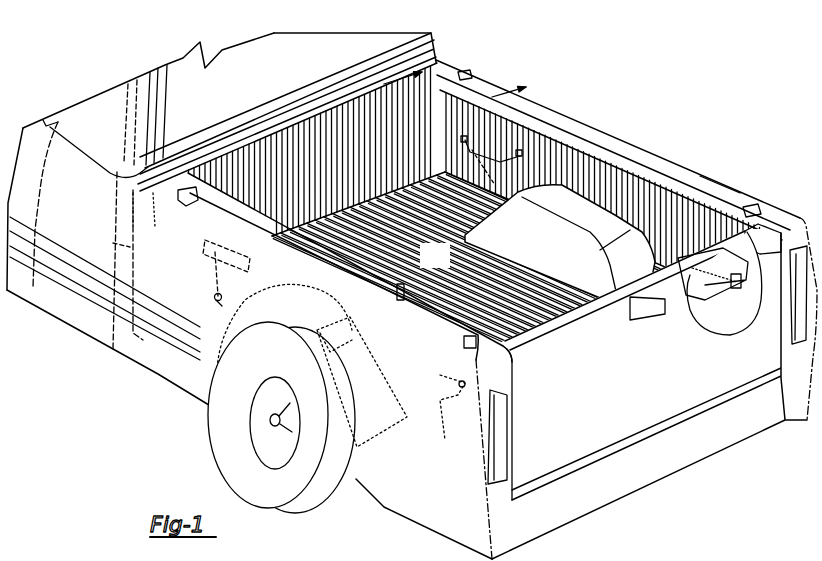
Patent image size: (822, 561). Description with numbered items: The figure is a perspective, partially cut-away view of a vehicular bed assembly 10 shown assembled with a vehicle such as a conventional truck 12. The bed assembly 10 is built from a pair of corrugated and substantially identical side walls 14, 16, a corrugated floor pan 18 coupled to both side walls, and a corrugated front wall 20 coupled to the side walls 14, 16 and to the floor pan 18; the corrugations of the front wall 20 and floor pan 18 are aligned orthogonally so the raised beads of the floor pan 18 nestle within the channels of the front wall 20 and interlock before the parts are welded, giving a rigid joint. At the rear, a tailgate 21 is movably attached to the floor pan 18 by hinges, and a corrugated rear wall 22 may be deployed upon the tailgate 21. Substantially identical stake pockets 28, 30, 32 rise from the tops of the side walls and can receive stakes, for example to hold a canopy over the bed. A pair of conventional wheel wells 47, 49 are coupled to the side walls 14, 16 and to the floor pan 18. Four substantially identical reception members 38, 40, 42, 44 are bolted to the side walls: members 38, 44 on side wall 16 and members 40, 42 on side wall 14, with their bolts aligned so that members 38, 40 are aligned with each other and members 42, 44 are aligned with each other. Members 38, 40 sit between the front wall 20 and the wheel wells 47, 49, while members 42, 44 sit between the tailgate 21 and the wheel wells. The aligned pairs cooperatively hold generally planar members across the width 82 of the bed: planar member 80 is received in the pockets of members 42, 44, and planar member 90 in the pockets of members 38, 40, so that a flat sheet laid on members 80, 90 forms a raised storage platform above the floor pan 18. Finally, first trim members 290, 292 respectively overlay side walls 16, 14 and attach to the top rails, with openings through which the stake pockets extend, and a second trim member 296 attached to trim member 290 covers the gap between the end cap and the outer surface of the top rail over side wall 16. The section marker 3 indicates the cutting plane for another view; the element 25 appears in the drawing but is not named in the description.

The vehicular bed assembly 10 is at (711, 90).
The truck 12 is at (344, 60).
The side wall 14 is at (610, 180).
The side wall 16 is at (402, 289).
The floor pan 18 is at (427, 267).
The front wall 20 is at (319, 163).
The tailgate 21 is at (650, 382).
The rear wall 22 is at (548, 342).
The tie-down anchor 25 is at (466, 76).
The stake pocket 28 is at (755, 207).
The stake pocket 30 is at (193, 202).
The stake pocket 32 is at (471, 339).
The reception member 38 is at (214, 284).
The reception member 40 is at (540, 170).
The reception member 42 is at (732, 286).
The reception member 44 is at (449, 415).
The wheel well 47 is at (528, 255).
The wheel well 49 is at (358, 387).
The generally planar member 80 is at (700, 275).
The width 82 is at (287, 112).
The generally planar member 90 is at (213, 234).
The first trim member 290 is at (304, 273).
The first trim member 292 is at (710, 183).
The second trim member 296 is at (110, 245).
The section line 3- 3 is at (428, 60).